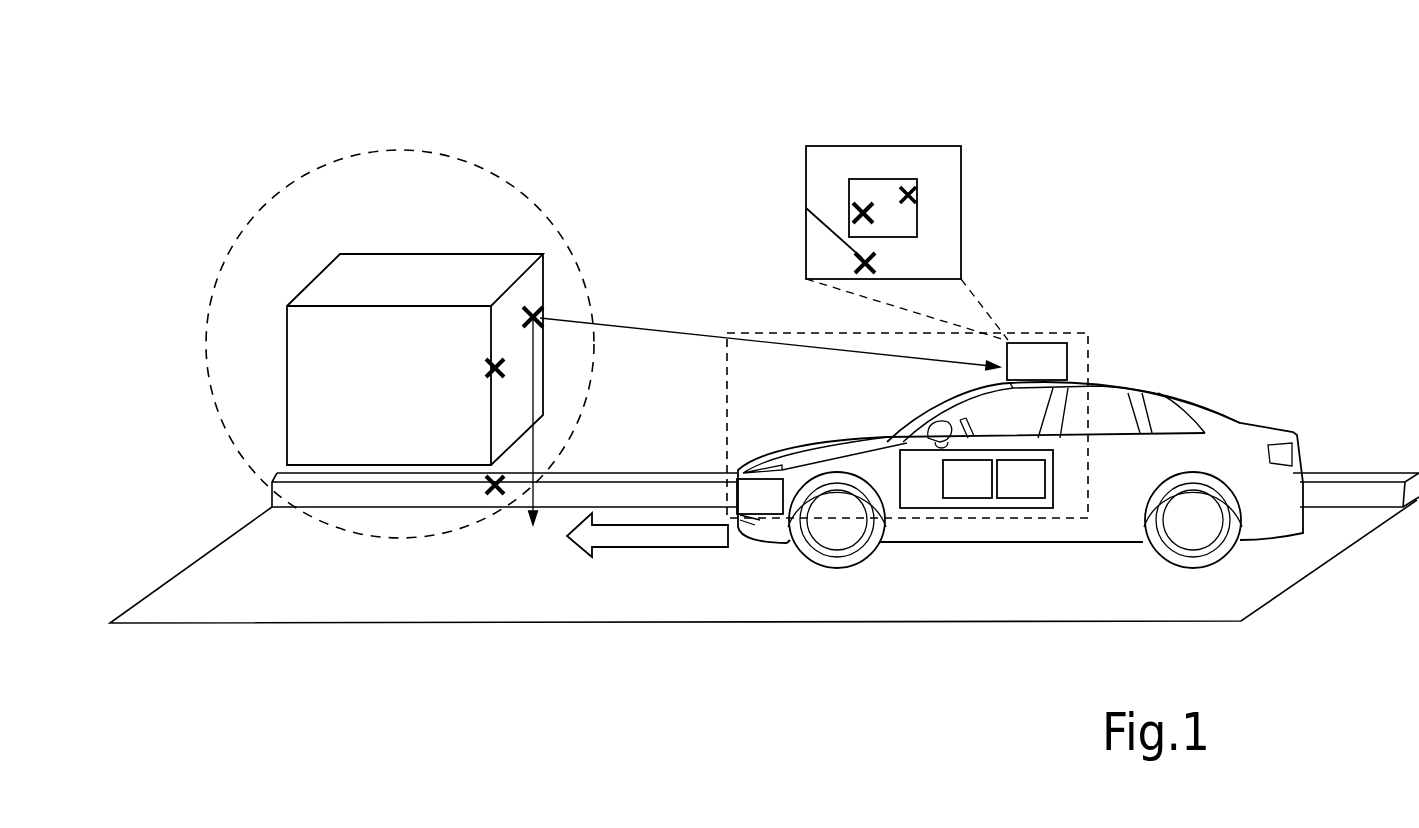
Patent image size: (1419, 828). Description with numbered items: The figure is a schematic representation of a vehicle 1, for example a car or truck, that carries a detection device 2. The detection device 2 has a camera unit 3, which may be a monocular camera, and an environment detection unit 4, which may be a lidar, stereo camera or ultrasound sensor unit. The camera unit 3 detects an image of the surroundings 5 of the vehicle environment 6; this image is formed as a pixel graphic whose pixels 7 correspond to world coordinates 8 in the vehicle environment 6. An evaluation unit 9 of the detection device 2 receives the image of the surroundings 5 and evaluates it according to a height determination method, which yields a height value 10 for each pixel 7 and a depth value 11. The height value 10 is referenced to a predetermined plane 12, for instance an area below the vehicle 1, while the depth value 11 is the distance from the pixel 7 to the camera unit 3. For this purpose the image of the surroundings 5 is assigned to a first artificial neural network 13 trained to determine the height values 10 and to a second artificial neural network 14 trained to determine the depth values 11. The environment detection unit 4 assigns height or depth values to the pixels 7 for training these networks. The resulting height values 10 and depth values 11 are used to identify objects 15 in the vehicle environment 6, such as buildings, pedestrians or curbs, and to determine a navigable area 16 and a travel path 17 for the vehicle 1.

The vehicle 1 is at (1210, 360).
The detection device 2 is at (1090, 318).
The camera unit 3 is at (1028, 377).
The environment detection unit 4 is at (750, 513).
The image of the surroundings 5 is at (872, 215).
The vehicle environment 6 is at (229, 179).
The pixel 7 is at (901, 175).
The world coordinates 8 is at (556, 291).
The evaluation unit 9 is at (914, 497).
The height value 10 is at (534, 447).
The depth value 11 is at (662, 330).
The predetermined plane 12 is at (845, 534).
The first artificial neural network 13 is at (950, 497).
The second artificial neural network 14 is at (1004, 497).
The object 15 is at (464, 162).
The navigable area 16 is at (672, 594).
The travel path 17 is at (635, 535).